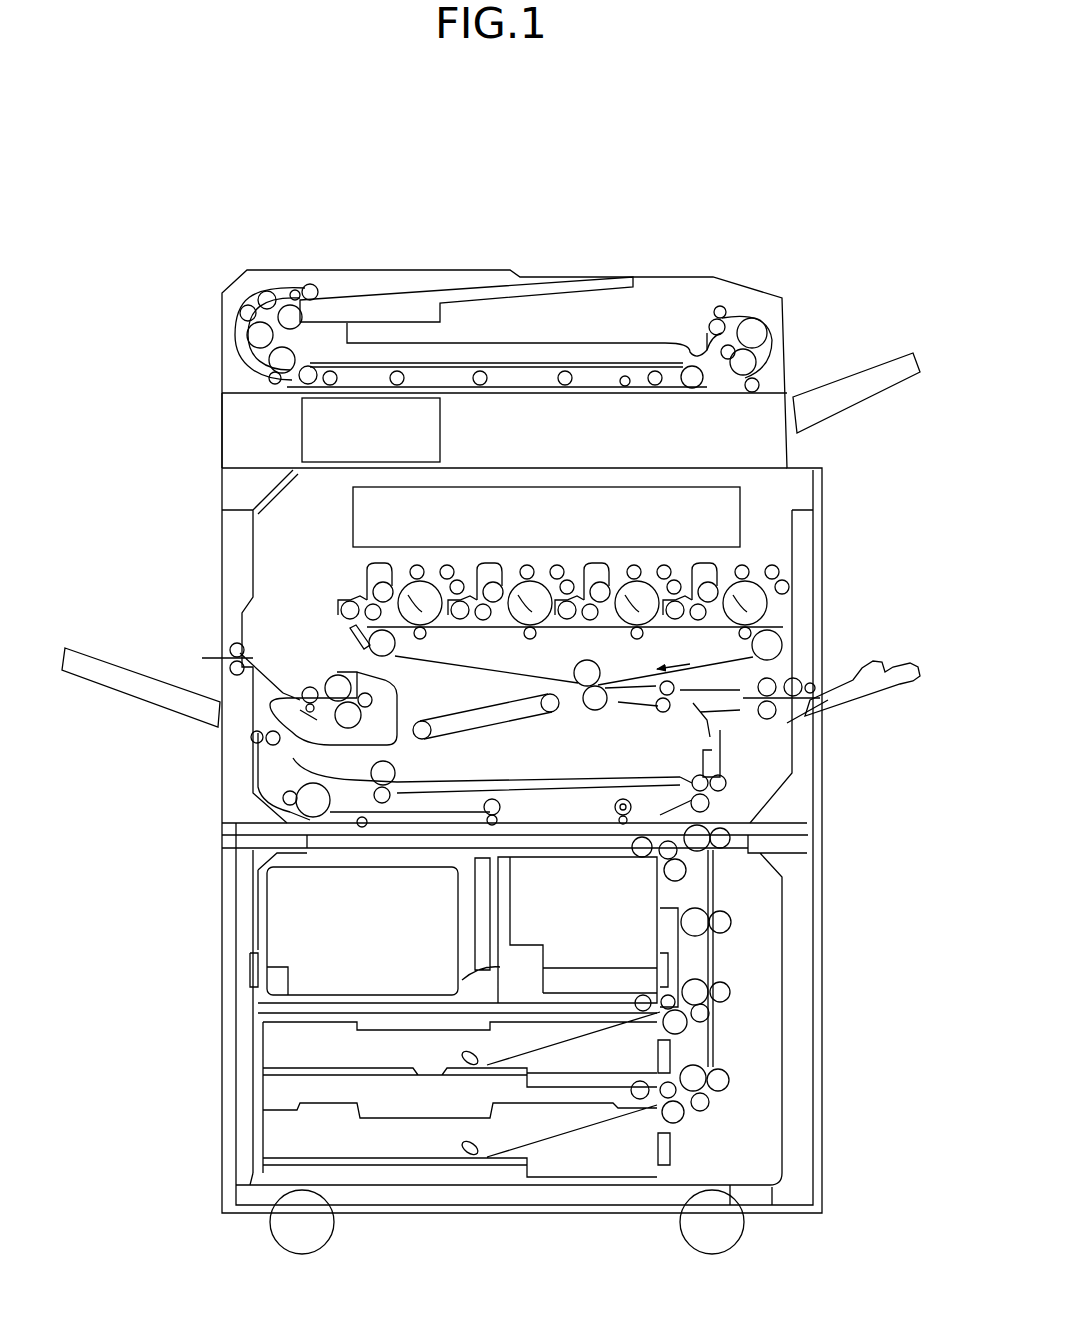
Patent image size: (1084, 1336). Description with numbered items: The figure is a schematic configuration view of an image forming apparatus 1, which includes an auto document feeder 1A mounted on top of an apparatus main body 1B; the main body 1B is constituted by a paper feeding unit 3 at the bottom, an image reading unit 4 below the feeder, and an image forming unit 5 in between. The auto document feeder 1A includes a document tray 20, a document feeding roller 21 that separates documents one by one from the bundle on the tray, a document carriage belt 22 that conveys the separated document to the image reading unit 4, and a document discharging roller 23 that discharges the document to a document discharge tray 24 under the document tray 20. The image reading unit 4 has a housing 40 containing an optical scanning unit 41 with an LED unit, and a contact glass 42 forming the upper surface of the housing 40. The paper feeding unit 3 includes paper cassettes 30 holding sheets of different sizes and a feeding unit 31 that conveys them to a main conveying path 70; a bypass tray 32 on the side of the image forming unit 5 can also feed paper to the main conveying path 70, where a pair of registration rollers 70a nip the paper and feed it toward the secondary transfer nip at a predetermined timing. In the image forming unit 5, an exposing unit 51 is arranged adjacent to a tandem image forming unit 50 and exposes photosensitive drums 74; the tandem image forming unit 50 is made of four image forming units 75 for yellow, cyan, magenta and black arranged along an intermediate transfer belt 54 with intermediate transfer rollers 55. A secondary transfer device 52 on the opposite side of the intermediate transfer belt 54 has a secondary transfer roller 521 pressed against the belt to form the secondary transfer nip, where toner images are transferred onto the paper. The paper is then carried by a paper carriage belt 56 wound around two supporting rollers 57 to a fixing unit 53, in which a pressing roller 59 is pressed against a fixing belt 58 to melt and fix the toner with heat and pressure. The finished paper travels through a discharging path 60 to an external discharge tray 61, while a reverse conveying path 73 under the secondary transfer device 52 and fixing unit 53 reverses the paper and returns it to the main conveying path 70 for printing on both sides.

The image forming apparatus 1 is at (753, 187).
The auto document feeder (ADF) 1A is at (182, 328).
The apparatus main body 1B is at (182, 400).
The paper feeding unit 3 is at (207, 1060).
The image reading unit 4 is at (207, 447).
The image forming unit 5 is at (207, 555).
The document tray 20 is at (575, 292).
The document feeding roller 21 is at (255, 295).
The document carriage belt 22 is at (522, 362).
The document discharging roller 23 is at (752, 310).
The document discharge tray 24 is at (650, 340).
The paper cassettes 30 is at (425, 1053).
The feeding unit 31 is at (735, 1040).
The bypass tray 32 is at (906, 655).
The housing 40 is at (785, 452).
The optical scanning unit 41 is at (432, 437).
The contact glass 42 is at (628, 392).
The tandem image forming unit 50 is at (347, 583).
The exposing unit 51 is at (357, 513).
The secondary transfer device 52 is at (572, 745).
The secondary transfer roller 521 is at (600, 708).
The fixing unit 53 is at (305, 665).
The intermediate transfer belt 54 is at (413, 663).
The intermediate transfer rollers 55 is at (428, 635).
The paper carriage belt 56 is at (470, 735).
The supporting rollers 57 is at (547, 700).
The fixing belt 58 is at (357, 670).
The pressing roller 59 is at (342, 748).
The discharging path 60 is at (268, 700).
The external discharge tray 61 is at (83, 650).
The main conveying path 70 is at (638, 705).
The registration rollers 70a is at (677, 687).
The reverse conveying path 73 is at (240, 763).
The photosensitive drums 74 is at (760, 607).
The image forming units 75 is at (410, 557).